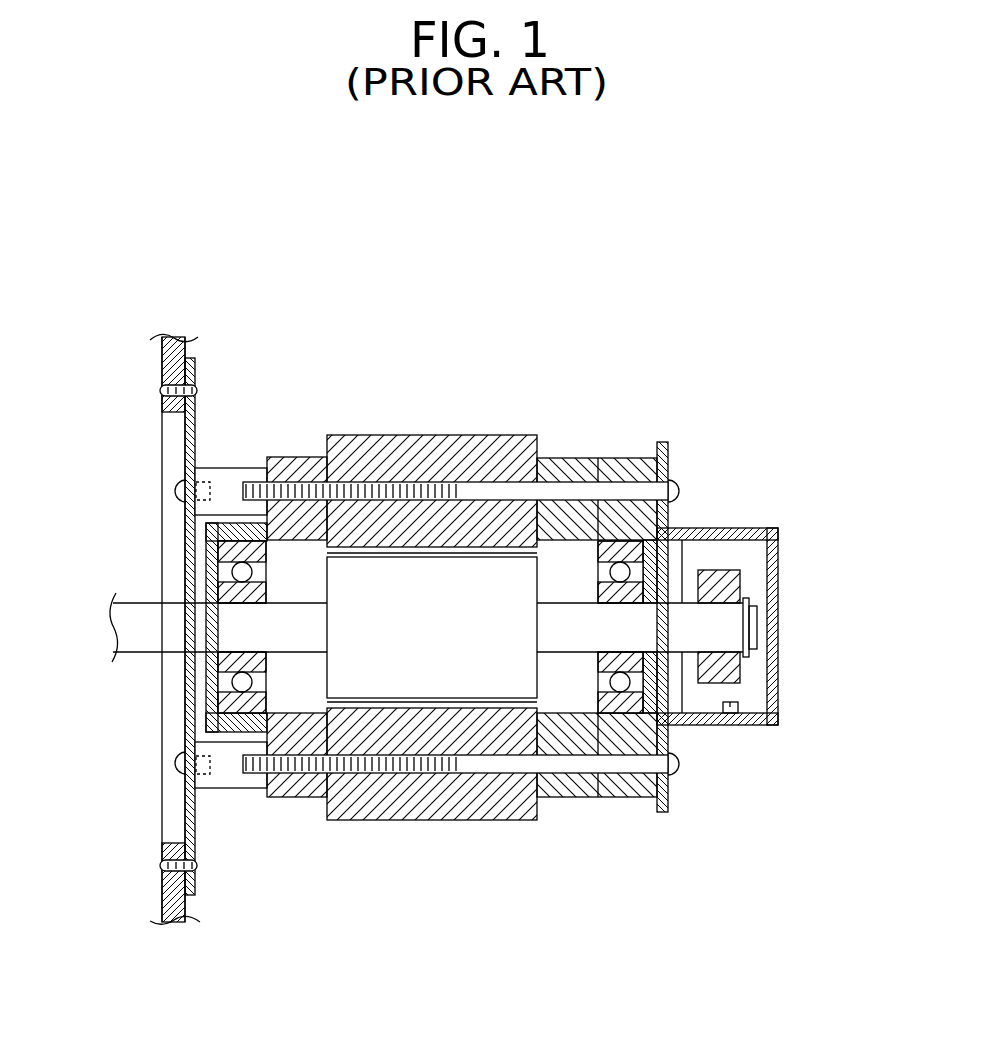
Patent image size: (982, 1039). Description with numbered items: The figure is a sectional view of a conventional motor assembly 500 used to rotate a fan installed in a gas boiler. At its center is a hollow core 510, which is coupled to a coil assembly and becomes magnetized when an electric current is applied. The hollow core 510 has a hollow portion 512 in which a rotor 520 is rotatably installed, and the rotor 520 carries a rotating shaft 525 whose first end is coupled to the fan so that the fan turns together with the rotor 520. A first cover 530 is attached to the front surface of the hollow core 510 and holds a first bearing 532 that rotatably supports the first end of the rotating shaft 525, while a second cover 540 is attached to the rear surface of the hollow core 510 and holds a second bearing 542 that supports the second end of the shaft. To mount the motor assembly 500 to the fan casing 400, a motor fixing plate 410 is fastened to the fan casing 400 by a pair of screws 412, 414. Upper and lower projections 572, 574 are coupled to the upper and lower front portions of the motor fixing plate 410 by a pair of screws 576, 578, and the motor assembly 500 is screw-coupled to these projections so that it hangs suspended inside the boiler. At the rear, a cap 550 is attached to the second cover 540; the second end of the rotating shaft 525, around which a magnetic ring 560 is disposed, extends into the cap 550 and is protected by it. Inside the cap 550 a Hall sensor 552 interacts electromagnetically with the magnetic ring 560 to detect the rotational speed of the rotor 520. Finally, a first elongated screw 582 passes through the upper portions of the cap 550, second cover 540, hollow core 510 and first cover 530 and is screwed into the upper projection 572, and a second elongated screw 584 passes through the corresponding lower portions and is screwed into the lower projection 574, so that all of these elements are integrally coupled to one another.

The fan casing 400 is at (172, 362).
The motor fixing plate 410 is at (192, 828).
The screw 412 is at (158, 390).
The screw 414 is at (160, 866).
The motor assembly 500 is at (428, 855).
The hollow core 510 is at (422, 457).
The hollow portion 512 is at (477, 552).
The rotor 520 is at (462, 650).
The rotating shaft 525 is at (567, 632).
The first cover 530 is at (293, 467).
The first bearing 532 is at (243, 553).
The second cover 540 is at (560, 467).
The second bearing 542 is at (618, 553).
The cap 550 is at (773, 640).
The Hall sensor 552 is at (730, 703).
The magnetic ring 560 is at (715, 583).
The upper projection 572 is at (215, 473).
The lower projection 574 is at (228, 775).
The screw 576 is at (177, 490).
The screw 578 is at (177, 763).
The first elongated screw 582 is at (680, 490).
The second elongated screw 584 is at (680, 762).